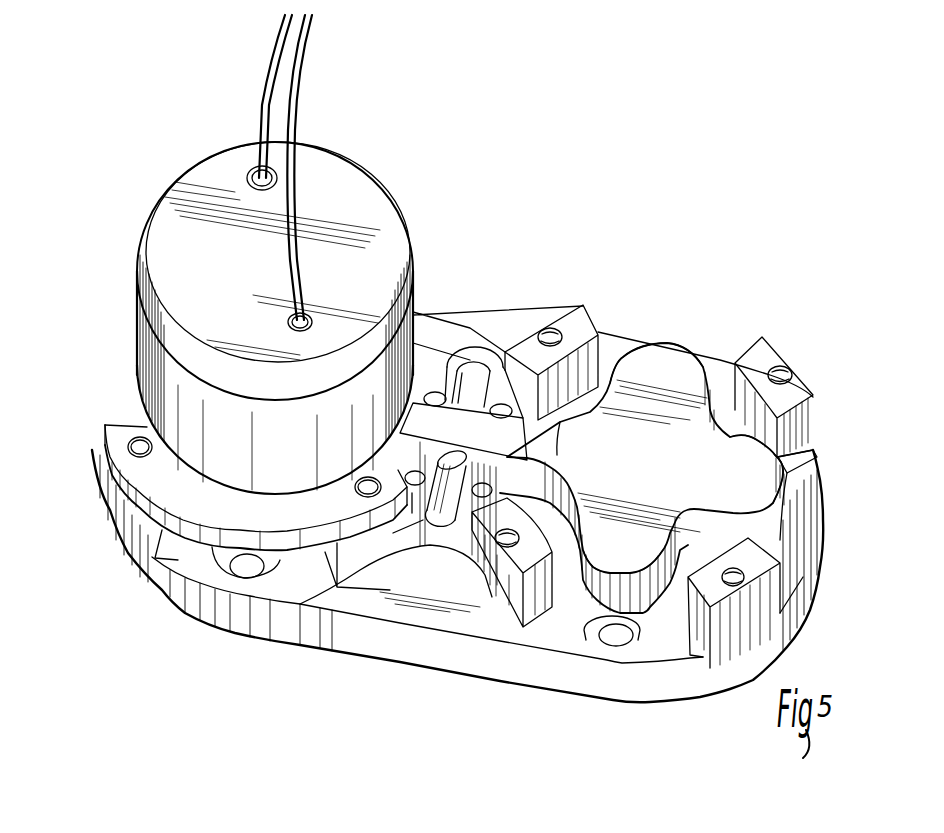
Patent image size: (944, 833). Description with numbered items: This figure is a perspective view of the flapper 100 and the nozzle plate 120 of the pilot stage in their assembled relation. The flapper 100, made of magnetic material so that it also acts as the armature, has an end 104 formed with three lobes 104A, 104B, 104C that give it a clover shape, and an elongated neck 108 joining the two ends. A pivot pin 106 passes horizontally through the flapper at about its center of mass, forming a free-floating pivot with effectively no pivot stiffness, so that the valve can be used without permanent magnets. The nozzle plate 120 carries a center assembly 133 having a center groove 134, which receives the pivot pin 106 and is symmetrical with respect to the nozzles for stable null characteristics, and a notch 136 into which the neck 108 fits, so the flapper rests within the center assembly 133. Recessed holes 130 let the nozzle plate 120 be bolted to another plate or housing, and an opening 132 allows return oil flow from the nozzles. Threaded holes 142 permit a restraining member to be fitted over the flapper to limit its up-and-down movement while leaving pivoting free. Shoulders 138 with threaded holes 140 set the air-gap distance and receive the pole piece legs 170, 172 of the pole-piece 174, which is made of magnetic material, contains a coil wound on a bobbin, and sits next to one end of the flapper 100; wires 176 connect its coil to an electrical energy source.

The flapper 100 is at (797, 470).
The end of flapper 104 is at (668, 340).
The lobe 104A is at (672, 375).
The lobe 104B is at (753, 490).
The lobe 104C is at (632, 557).
The pivot pin 106 is at (490, 423).
The neck 108 is at (520, 440).
The nozzle plate 120 is at (808, 382).
The recessed holes 130 is at (218, 563).
The opening 132 is at (483, 347).
The center assembly 133 is at (465, 360).
The center groove 134 is at (442, 530).
The notch 136 is at (594, 332).
The shoulders 138 is at (580, 327).
The threaded holes 140 is at (553, 333).
The threaded holes 142 is at (437, 520).
The pole piece leg 170 is at (122, 430).
The pole piece leg 172 is at (386, 262).
The pole-piece 174 is at (331, 185).
The wires 176 is at (268, 100).